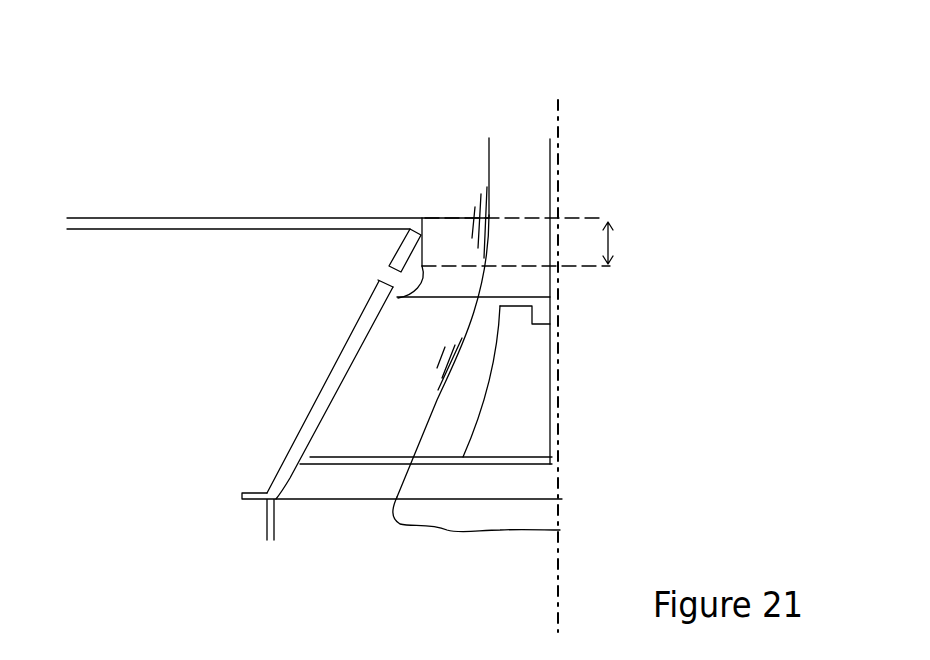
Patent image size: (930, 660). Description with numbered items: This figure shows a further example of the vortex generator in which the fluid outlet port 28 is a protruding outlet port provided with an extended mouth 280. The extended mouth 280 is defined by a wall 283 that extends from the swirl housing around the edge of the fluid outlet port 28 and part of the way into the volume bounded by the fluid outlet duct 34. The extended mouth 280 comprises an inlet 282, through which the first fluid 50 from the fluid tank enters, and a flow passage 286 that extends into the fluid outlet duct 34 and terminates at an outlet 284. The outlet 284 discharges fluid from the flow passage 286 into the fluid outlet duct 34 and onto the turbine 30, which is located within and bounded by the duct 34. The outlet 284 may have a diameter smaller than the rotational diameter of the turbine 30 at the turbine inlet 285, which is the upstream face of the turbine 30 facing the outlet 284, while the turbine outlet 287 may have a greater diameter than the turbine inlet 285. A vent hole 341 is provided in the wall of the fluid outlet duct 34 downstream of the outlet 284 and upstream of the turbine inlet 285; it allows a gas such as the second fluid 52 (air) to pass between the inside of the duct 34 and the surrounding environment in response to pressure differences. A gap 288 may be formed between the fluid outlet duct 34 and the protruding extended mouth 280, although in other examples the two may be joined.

The fluid outlet port 28 is at (464, 204).
The turbine 30 is at (402, 418).
The fluid outlet duct 34 is at (313, 403).
The first fluid 50 is at (262, 189).
The second fluid 52 is at (535, 189).
The extended mouth 280 is at (438, 230).
The inlet 282 is at (578, 212).
The wall 283 is at (405, 247).
The outlet 284 is at (577, 270).
The turbine inlet 285 is at (520, 295).
The flow passage 286 is at (636, 243).
The turbine outlet 287 is at (468, 464).
The gap 288 is at (390, 266).
The vent hole 341 is at (383, 292).